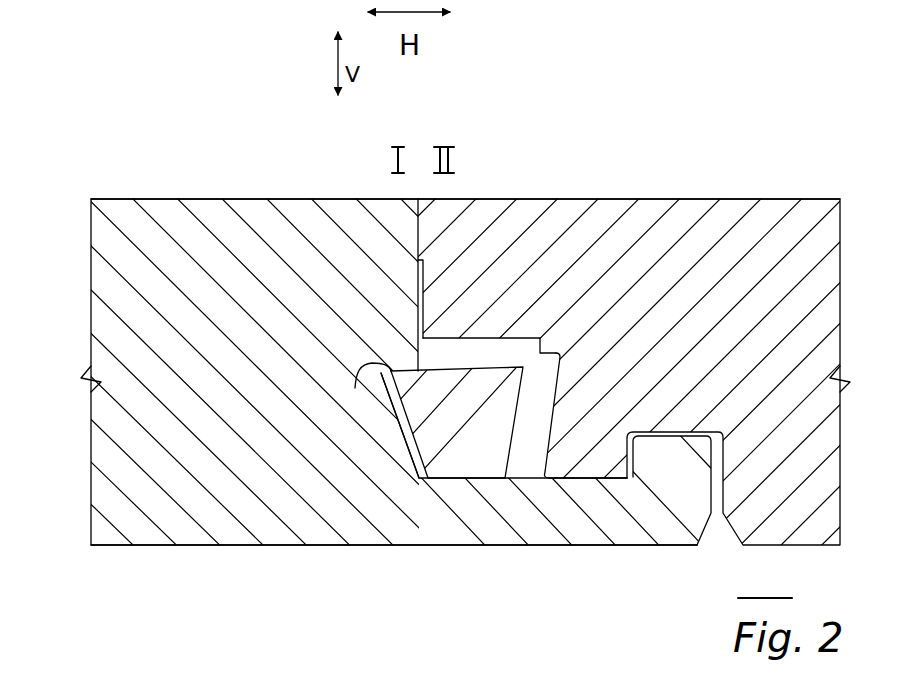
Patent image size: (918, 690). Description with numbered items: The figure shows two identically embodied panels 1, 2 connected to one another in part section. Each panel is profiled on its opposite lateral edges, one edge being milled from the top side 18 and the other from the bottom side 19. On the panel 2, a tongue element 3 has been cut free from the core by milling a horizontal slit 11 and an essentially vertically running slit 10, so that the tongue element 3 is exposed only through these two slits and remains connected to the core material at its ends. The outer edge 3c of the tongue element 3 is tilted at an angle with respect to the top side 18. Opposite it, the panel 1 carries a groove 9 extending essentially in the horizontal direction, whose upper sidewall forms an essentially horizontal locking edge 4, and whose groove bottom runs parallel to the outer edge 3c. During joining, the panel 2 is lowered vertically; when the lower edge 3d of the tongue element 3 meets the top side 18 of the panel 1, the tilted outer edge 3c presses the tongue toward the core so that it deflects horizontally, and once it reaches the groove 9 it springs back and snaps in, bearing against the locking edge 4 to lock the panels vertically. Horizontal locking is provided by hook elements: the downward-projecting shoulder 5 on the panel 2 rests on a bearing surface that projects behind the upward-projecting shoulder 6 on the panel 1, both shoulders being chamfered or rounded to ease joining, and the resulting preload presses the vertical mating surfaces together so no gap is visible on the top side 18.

The panel 1 is at (439, 398).
The panel 2 is at (476, 365).
The tongue element 3 is at (468, 356).
The outer edge of the tongue element 3c is at (413, 445).
The lower edge of the tongue element 3d is at (468, 472).
The locking edge 4 is at (356, 382).
The shoulder 5 is at (594, 462).
The shoulder 6 is at (687, 457).
The groove 9 is at (401, 417).
The slit 10 is at (527, 453).
The slit 11 is at (473, 355).
The top side 18 is at (192, 196).
The bottom side 19 is at (363, 549).